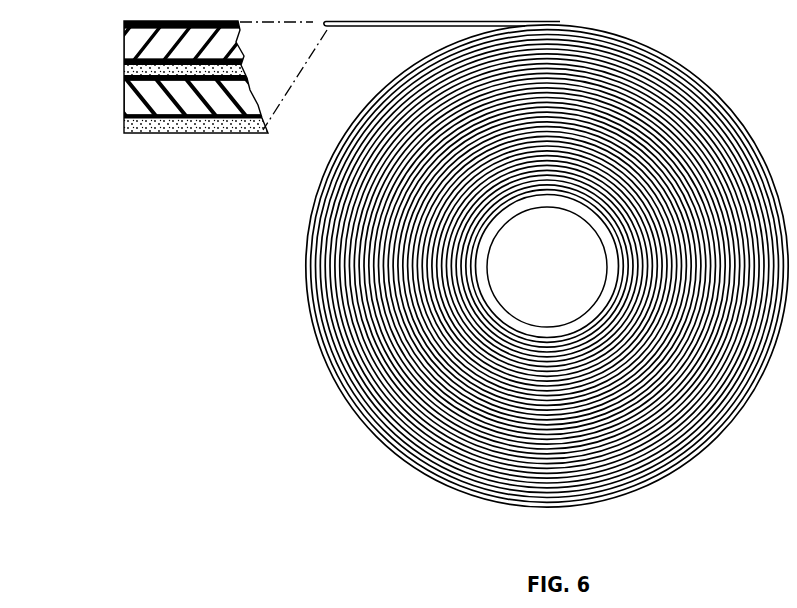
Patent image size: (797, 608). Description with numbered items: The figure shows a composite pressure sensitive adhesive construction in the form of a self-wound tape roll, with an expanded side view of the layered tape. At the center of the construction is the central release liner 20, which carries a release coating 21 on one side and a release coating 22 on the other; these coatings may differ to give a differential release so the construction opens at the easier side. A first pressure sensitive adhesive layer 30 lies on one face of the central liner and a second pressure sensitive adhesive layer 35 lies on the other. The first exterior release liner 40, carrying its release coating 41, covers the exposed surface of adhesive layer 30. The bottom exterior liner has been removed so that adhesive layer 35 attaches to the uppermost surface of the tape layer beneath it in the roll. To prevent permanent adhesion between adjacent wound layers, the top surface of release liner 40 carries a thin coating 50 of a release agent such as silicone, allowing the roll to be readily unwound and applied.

The thin coating of release agent 50 is at (124, 24).
The first exterior release liner 40 is at (124, 48).
The release coating 41 is at (124, 63).
The first pressure sensitive adhesive layer 30 is at (124, 78).
The central release liner 20 is at (124, 105).
The release coating 21 is at (124, 100).
The release coating 22 is at (124, 116).
The second pressure sensitive adhesive layer 35 is at (124, 128).